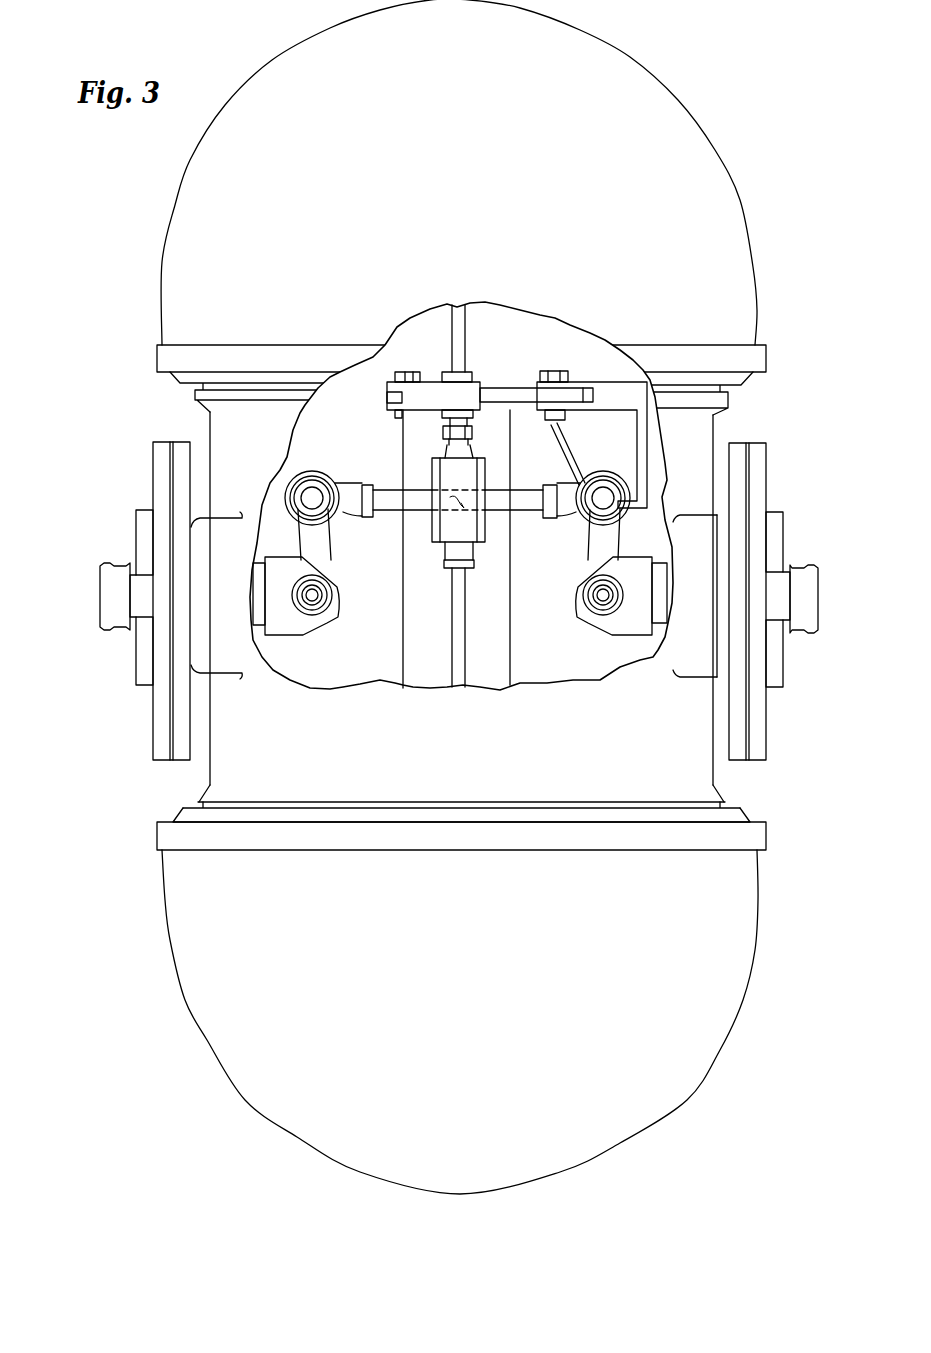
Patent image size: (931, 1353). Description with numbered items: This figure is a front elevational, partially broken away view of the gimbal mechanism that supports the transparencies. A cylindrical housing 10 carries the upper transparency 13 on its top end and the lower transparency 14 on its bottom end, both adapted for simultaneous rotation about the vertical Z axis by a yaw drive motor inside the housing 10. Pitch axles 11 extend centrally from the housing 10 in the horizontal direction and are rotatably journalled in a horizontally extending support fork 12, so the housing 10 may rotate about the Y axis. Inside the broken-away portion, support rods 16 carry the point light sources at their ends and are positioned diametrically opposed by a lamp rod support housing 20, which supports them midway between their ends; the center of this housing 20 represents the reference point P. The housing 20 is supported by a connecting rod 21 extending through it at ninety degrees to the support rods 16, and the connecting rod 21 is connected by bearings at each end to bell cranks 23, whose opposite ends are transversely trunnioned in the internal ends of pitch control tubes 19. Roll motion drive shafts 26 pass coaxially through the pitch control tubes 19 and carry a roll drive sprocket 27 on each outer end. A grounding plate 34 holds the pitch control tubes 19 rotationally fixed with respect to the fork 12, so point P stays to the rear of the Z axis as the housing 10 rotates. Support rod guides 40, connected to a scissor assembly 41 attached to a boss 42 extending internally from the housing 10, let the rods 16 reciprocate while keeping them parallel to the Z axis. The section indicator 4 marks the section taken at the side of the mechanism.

The cylindrical housing 10 is at (718, 432).
The pitch axles 11 is at (198, 522).
The support fork 12 is at (164, 441).
The upper transparency 13 is at (724, 162).
The lower transparency 14 is at (210, 1050).
The support rods 16 is at (468, 343).
The pitch control tubes 19 is at (287, 557).
The lamp rod support housing 20 is at (462, 462).
The connecting rod 21 is at (394, 484).
The bell cranks 23 is at (331, 549).
The roll motion drive shafts 26 is at (145, 617).
The roll drive sprocket 27 is at (104, 565).
The grounding plate 34 is at (136, 528).
The support rod guide 40 is at (452, 368).
The scissor assembly 41 is at (523, 373).
The boss 42 is at (612, 378).
The section line 4- 4 is at (93, 599).
The reference point P is at (442, 519).